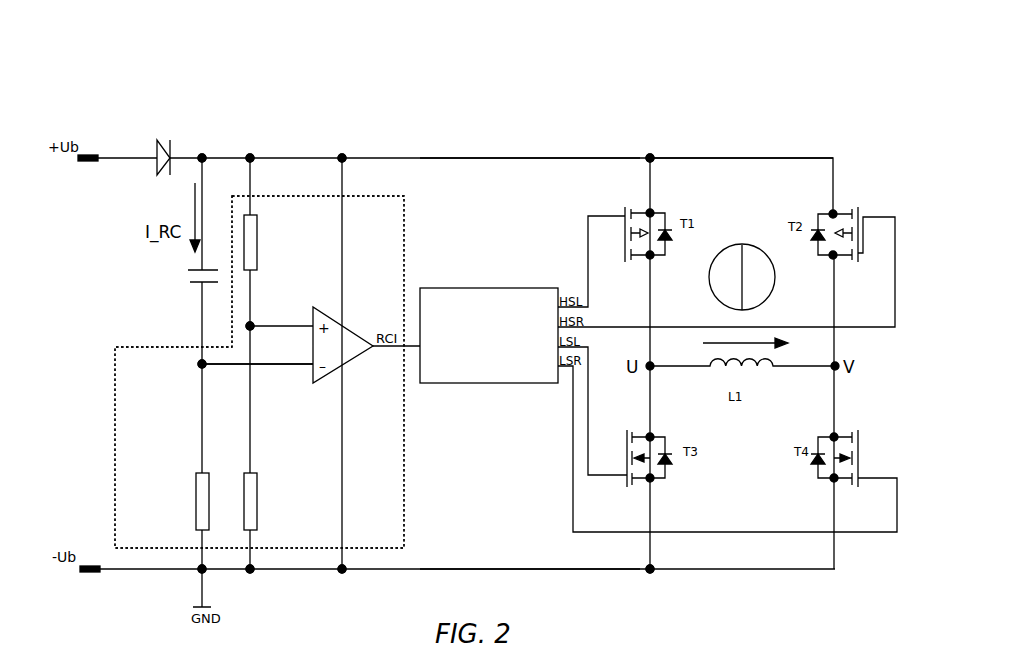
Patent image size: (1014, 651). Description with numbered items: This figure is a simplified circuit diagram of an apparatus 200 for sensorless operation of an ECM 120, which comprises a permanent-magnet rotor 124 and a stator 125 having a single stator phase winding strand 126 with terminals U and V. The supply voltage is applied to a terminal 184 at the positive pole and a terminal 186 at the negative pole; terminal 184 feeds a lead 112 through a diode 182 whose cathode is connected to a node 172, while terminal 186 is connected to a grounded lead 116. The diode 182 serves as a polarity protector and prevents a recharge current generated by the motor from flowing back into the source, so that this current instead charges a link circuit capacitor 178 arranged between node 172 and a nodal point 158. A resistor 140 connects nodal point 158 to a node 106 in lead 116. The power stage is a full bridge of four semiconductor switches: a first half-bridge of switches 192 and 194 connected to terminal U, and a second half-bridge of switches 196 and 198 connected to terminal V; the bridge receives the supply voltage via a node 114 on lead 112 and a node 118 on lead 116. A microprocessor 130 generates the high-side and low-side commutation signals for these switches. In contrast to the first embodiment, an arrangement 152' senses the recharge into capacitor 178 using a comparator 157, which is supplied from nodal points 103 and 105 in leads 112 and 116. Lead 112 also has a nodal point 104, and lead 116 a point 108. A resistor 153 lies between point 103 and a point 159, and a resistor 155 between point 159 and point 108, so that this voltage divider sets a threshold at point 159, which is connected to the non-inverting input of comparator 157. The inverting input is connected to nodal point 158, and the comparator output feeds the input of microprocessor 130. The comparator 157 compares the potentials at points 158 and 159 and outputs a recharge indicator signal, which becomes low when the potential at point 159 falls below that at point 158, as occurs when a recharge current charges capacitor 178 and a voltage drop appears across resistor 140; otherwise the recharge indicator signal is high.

The terminal 184 is at (82, 154).
The diode 182 is at (166, 140).
The node 172 is at (205, 156).
The node 104 is at (253, 161).
The nodal point 103 is at (344, 155).
The lead 112 is at (504, 157).
The node 114 is at (648, 162).
The resistor 153 is at (258, 232).
The point 159 is at (253, 323).
The comparator 157 is at (312, 372).
The nodal point 158 is at (200, 366).
The link circuit capacitor 178 is at (194, 283).
The resistor 140 is at (197, 486).
The resistor 155 is at (258, 492).
The arrangement for sensing the recharge 152' is at (297, 372).
The microprocessor 130 is at (490, 288).
The node 106 is at (200, 572).
The node 108 is at (253, 572).
The point 105 is at (345, 573).
The lead 116 is at (508, 572).
The node 118 is at (652, 573).
The terminal 186 is at (88, 572).
The apparatus 200 is at (771, 116).
The ECM 120 is at (745, 198).
The rotor 124 is at (770, 235).
The semiconductor switch 192 is at (658, 272).
The semiconductor switch 196 is at (818, 272).
The semiconductor switch 194 is at (660, 498).
The semiconductor switch 198 is at (824, 498).
The stator phase winding strand 126 is at (710, 362).
The stator 125 is at (758, 378).